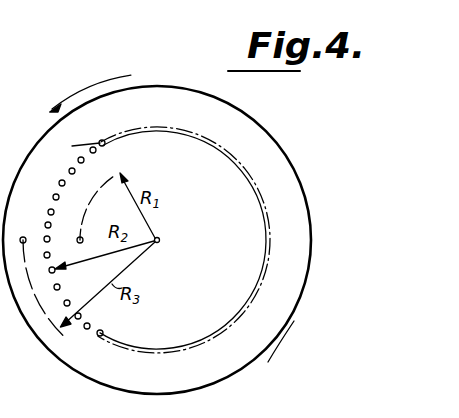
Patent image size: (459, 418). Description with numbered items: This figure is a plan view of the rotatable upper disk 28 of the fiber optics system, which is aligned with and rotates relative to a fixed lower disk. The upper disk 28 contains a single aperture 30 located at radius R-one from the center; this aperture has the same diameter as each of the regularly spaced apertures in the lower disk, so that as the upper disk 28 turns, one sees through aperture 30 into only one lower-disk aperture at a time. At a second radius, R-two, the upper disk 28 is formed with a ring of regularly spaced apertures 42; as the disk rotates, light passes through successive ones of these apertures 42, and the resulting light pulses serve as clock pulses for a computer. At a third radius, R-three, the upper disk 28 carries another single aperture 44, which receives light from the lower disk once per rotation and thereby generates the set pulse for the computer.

The upper disk 28 is at (300, 223).
The single aperture 30 is at (79, 237).
The regularly spaced apertures 42 is at (72, 168).
The single aperture 44 is at (24, 237).